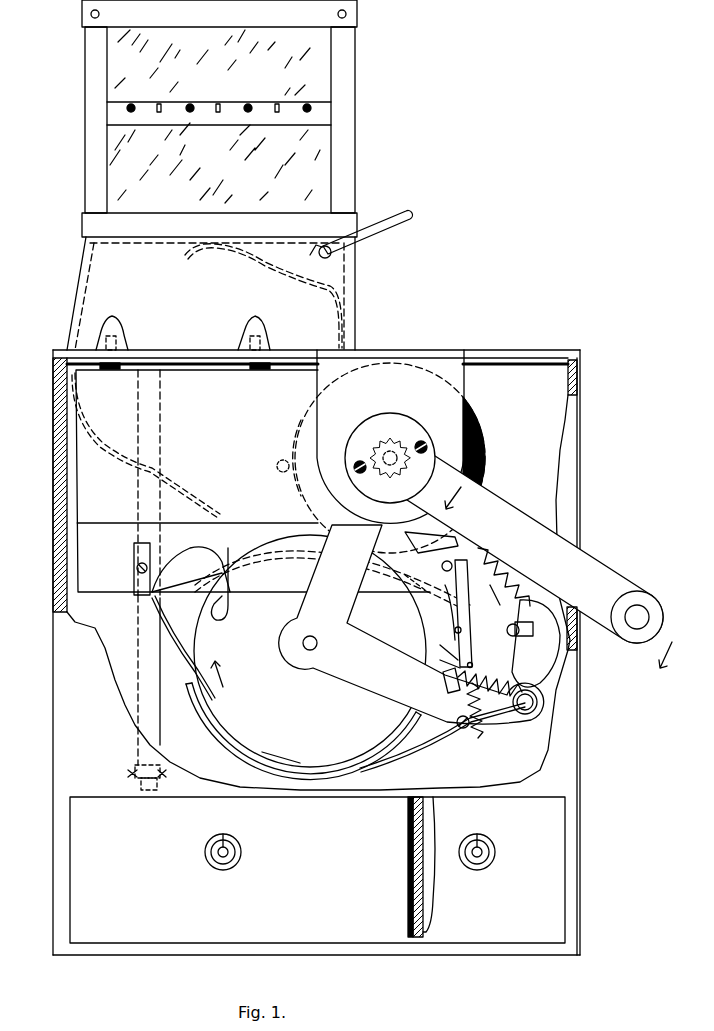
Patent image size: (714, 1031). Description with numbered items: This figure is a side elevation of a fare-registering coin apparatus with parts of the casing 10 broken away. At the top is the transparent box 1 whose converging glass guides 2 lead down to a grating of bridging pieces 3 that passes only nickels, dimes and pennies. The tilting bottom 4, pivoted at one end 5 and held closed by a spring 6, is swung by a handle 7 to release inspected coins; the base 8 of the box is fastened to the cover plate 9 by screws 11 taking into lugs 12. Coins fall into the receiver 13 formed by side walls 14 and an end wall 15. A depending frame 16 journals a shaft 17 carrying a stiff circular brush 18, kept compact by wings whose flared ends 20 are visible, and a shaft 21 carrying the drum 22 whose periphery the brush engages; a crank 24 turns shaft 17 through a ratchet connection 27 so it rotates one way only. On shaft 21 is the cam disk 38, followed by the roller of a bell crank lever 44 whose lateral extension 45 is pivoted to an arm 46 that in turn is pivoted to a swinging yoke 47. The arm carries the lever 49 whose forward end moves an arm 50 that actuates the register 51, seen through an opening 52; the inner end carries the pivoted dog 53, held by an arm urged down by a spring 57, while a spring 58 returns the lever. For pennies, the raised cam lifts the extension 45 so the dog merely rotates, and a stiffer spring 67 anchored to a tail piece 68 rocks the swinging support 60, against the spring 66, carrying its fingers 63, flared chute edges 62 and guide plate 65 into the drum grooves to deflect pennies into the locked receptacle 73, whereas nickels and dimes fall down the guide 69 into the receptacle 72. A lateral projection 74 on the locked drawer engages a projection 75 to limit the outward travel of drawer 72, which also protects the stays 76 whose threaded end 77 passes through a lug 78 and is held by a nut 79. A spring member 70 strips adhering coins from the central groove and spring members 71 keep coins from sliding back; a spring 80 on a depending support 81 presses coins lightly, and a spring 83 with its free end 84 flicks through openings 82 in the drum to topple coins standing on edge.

The box 1 is at (345, 137).
The converging glass guides 2 is at (218, 116).
The bridging pieces 3 is at (218, 104).
The tilting bottom 4 is at (128, 243).
The pivot 5 is at (319, 256).
The spring 6 is at (263, 262).
The handle 7 is at (397, 222).
The base 8 is at (347, 305).
The cover plate 9 is at (473, 352).
The casing 10 is at (53, 462).
The screws 11 is at (112, 370).
The lugs 12 is at (117, 335).
The receiver 13 is at (253, 482).
The side walls 14 is at (123, 567).
The end wall 15 is at (120, 462).
The depending frame 16 is at (556, 690).
The shaft 17 is at (390, 466).
The circular brush 18 is at (479, 423).
The flared ends of wings 20 is at (524, 552).
The shaft 21 is at (318, 643).
The drum 22 is at (329, 766).
The crank 24 is at (634, 592).
The ratchet connection 27 is at (400, 443).
The cam disk 38 is at (236, 738).
The bell crank lever 44 is at (440, 647).
The lateral extension 45 is at (466, 658).
The arm 46 is at (472, 641).
The swinging yoke 47 is at (452, 547).
The lever 49 is at (451, 600).
The arm 50 is at (526, 619).
The register 51 is at (536, 641).
The opening 52 is at (577, 636).
The dog 53 is at (413, 582).
The spring 57 is at (485, 596).
The spring 58 is at (520, 578).
The swinging support 60 is at (443, 680).
The flared edges 62 is at (448, 632).
The fingers 63 is at (442, 567).
The guide plate 65 is at (440, 661).
The spring 66 is at (497, 694).
The stiffer spring 67 is at (484, 731).
The tail piece 68 is at (464, 730).
The guide 69 is at (404, 757).
The spring member 70 is at (186, 656).
The spring members 71 is at (191, 569).
The receptacle 72 is at (317, 870).
The receptacle 73 is at (488, 863).
The lateral projection 74 is at (412, 856).
The lateral projection 75 is at (413, 885).
The stays 76 is at (139, 640).
The threaded end 77 is at (148, 792).
The lug 78 is at (122, 773).
The nut 79 is at (167, 776).
The spring 80 is at (292, 490).
The depending support 81 is at (307, 414).
The openings 82 is at (285, 756).
The spring 83 is at (235, 602).
The free end 84 is at (298, 541).